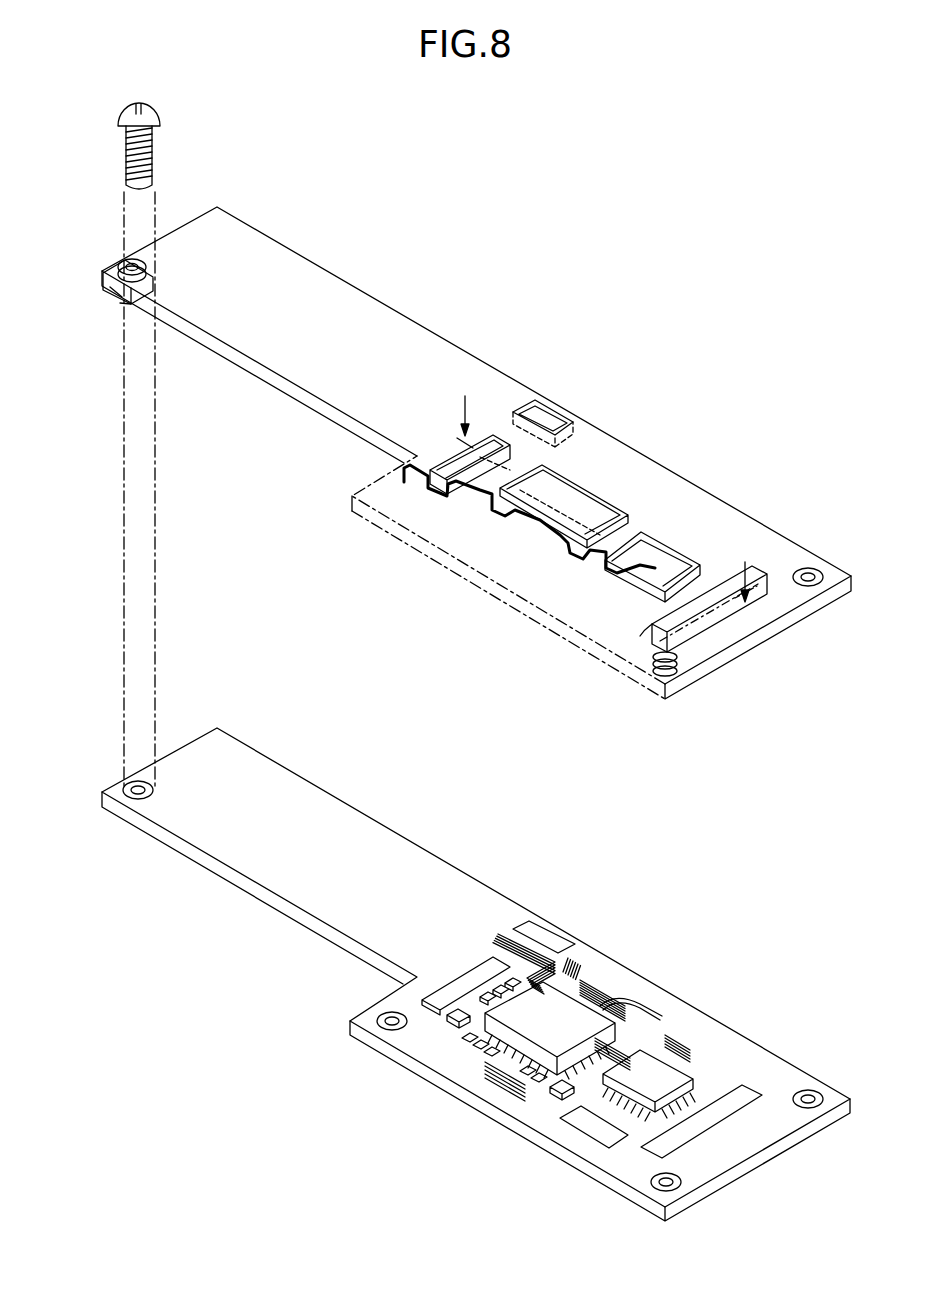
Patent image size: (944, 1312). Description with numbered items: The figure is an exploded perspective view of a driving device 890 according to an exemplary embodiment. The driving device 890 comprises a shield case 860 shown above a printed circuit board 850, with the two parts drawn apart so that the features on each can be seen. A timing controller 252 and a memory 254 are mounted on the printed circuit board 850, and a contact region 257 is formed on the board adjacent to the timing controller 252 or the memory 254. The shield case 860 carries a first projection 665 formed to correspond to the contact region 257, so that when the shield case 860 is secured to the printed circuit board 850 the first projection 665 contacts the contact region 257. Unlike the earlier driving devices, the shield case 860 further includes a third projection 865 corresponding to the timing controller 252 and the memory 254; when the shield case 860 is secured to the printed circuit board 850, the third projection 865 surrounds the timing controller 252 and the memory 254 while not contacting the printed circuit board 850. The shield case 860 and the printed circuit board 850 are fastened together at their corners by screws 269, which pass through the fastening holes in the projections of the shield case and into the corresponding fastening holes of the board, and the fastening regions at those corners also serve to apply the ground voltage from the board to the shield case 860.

The screw 269 is at (162, 103).
The driving device 890 is at (592, 292).
The shield case 860 is at (660, 485).
The first projection 665 is at (408, 477).
The third projection 865 is at (600, 552).
The printed circuit board 850 is at (305, 905).
The contact region 257 is at (463, 983).
The timing controller 252 is at (537, 995).
The memory 254 is at (672, 1077).